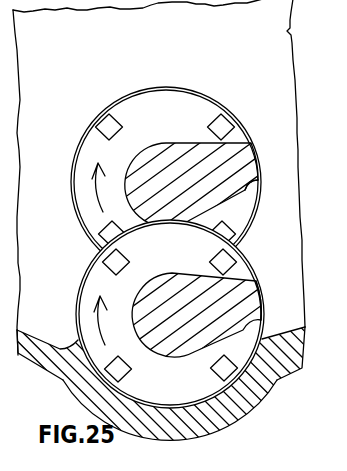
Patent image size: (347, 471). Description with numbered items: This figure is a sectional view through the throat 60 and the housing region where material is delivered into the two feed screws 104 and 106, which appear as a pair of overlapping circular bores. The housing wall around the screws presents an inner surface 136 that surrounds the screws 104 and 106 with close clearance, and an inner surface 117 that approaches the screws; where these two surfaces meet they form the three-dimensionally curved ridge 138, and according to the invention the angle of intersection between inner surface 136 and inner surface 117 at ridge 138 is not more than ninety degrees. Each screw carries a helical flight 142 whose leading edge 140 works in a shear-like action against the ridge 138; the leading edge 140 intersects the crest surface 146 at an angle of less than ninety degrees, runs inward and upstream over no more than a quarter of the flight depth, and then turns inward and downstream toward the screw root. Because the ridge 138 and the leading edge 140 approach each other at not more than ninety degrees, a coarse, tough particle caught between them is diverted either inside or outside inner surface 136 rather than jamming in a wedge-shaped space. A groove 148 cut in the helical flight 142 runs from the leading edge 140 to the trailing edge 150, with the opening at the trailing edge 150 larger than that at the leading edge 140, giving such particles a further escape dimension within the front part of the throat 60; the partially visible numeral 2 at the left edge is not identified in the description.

The housing 2 is at (10, 182).
The throat 60 is at (30, 328).
The feed screw 104 is at (165, 142).
The feed screw 106 is at (157, 280).
The inner surface 117 is at (288, 334).
The inner surface 136 is at (208, 430).
The three-dimensionally curved ridge 138 is at (293, 378).
The leading edge 140 is at (254, 184).
The helical flight 142 is at (248, 302).
The crest surface 146 is at (257, 169).
The groove 148 is at (102, 116).
The trailing edge 150 is at (247, 143).